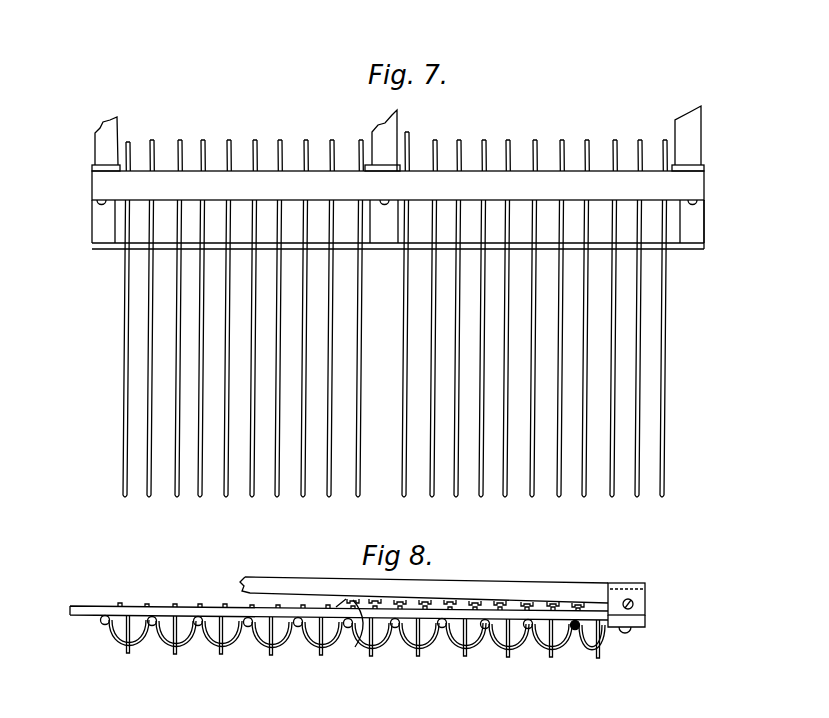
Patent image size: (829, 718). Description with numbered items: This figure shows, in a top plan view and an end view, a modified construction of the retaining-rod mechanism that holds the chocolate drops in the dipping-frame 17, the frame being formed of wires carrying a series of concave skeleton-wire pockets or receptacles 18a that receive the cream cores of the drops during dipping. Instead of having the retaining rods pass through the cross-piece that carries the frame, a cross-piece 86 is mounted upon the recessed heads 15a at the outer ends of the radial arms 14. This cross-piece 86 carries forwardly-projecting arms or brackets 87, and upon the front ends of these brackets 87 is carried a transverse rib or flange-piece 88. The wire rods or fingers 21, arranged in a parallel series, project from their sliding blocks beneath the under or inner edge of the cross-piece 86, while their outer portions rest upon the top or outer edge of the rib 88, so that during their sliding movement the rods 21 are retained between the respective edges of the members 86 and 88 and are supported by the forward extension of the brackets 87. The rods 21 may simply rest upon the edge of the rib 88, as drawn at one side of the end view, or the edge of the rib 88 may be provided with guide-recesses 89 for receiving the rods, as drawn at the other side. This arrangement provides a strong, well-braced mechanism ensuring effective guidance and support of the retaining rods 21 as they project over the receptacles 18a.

In FIG. 7, the radial arms 14 is at (105, 139).
In FIG. 7, the recessed heads 15a is at (104, 168).
In FIG. 8, the dipping-frame 17 is at (353, 648).
In FIG. 8, the concave pockets or receptacles 18a is at (118, 648).
In FIG. 7, the wire rods or fingers 21 is at (123, 379).
In FIG. 8, the wire rods or fingers 21 is at (197, 605).
In FIG. 7, the cross-piece 86 is at (398, 185).
In FIG. 8, the cross-piece 86 is at (260, 587).
In FIG. 7, the arms or brackets 87 is at (98, 213).
In FIG. 8, the arms or brackets 87 is at (638, 622).
In FIG. 7, the transverse rib or flange-piece 88 is at (118, 247).
In FIG. 8, the transverse rib or flange-piece 88 is at (97, 611).
In FIG. 8, the guide-recesses 89 is at (362, 630).